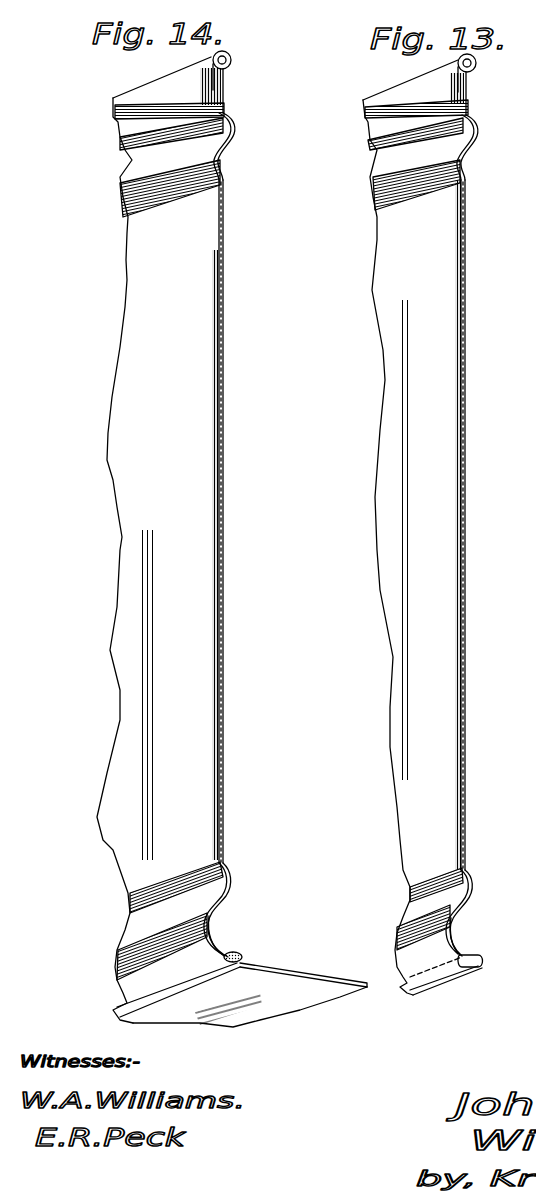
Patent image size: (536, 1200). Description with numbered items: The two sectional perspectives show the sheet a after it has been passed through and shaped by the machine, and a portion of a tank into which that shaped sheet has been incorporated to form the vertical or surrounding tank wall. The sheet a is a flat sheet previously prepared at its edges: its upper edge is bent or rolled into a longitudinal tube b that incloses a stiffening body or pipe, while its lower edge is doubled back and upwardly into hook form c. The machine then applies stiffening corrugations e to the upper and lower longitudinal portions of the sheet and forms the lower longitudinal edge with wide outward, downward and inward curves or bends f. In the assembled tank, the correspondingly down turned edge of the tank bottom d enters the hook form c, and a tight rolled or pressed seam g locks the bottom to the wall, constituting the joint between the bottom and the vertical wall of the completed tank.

In FIG. 14, the sheet a is at (226, 503).
In FIG. 13, the sheet a is at (470, 513).
In FIG. 14, the longitudinal tube b is at (232, 60).
In FIG. 13, the longitudinal tube b is at (477, 66).
In FIG. 13, the hook form c is at (487, 951).
In FIG. 14, the tank bottom d is at (308, 974).
In FIG. 14, the stiffening corrugations e is at (226, 153).
In FIG. 13, the stiffening corrugations e is at (466, 152).
In FIG. 14, the curves or bends f is at (212, 928).
In FIG. 13, the curves or bends f is at (453, 932).
In FIG. 14, the rolled or pressed seam g is at (251, 956).